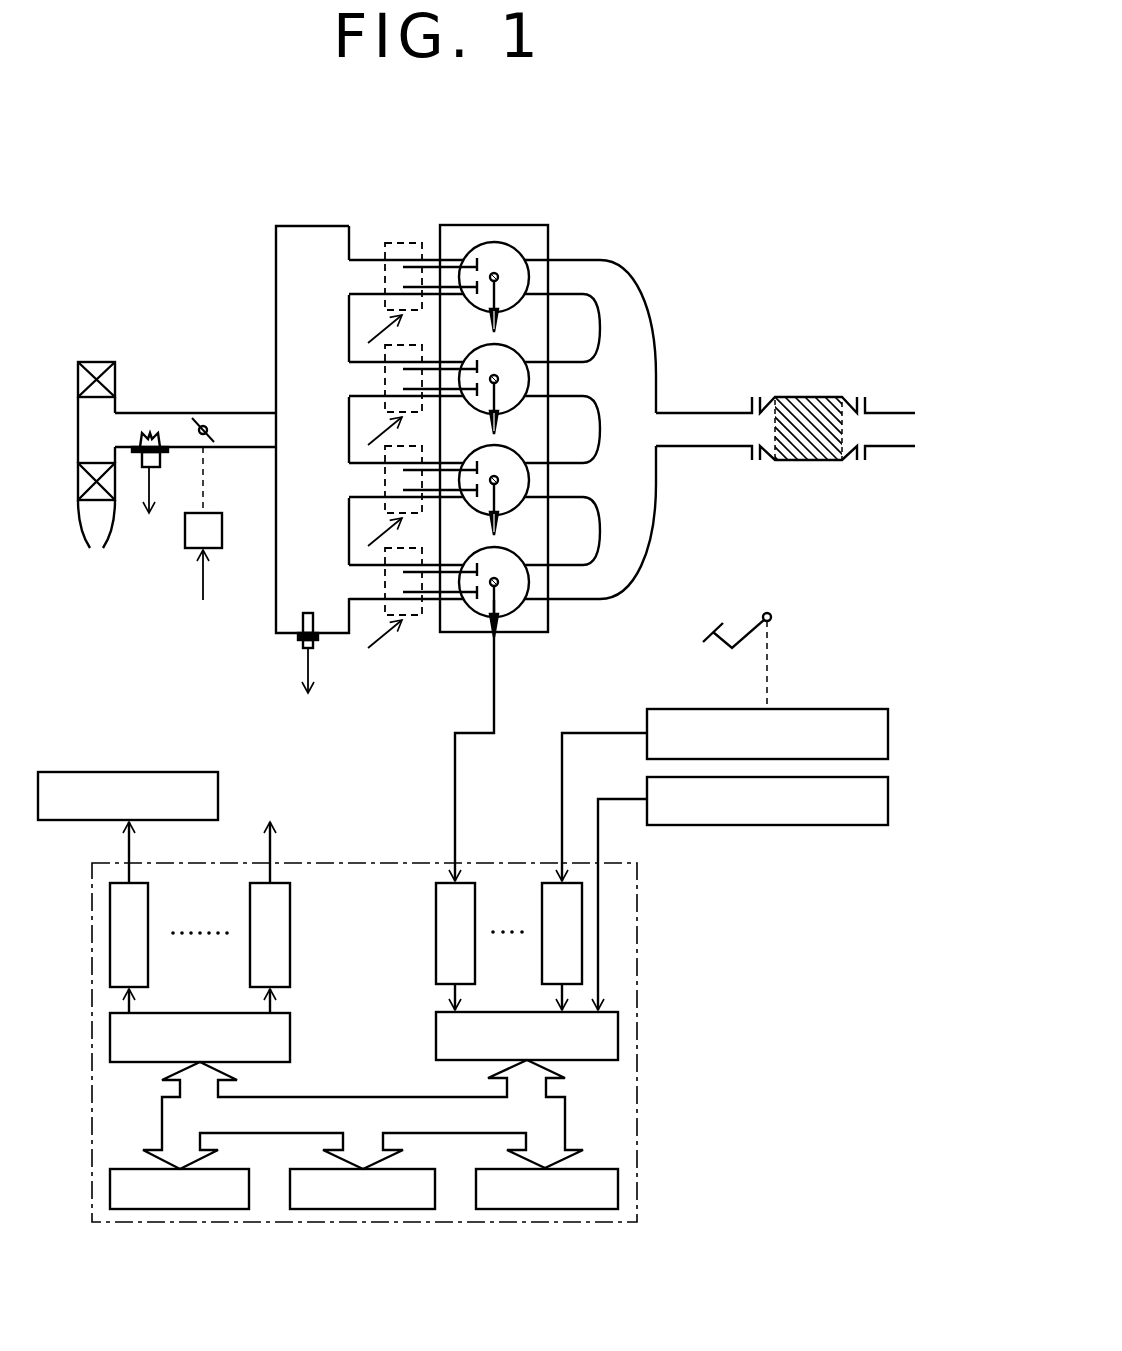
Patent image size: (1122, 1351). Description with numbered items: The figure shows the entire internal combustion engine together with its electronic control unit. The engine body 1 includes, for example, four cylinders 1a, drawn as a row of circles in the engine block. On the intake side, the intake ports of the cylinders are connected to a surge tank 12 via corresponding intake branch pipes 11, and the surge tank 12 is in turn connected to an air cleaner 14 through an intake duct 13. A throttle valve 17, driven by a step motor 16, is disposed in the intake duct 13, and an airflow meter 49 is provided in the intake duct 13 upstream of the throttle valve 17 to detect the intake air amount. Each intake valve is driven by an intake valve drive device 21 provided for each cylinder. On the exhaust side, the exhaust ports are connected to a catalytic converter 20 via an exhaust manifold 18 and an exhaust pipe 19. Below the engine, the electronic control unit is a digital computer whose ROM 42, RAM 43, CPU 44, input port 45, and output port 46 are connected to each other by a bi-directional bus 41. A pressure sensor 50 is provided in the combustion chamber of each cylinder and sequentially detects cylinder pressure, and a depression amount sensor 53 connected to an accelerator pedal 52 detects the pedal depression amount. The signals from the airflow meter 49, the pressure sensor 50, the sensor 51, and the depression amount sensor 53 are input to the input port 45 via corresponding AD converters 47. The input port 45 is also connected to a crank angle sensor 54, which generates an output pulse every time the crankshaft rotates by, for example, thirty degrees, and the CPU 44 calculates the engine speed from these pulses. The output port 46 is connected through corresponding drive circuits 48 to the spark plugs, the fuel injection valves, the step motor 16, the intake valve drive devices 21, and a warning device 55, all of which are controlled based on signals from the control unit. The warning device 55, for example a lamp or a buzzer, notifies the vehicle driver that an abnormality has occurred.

The engine body 1 is at (670, 232).
The cylinder 1a is at (494, 243).
The intake branch pipe 11 is at (372, 258).
The surge tank 12 is at (307, 226).
The intake duct 13 is at (235, 413).
The air cleaner 14 is at (116, 378).
The step motor 16 is at (183, 532).
The throttle valve 17 is at (200, 424).
The exhaust manifold 18 is at (642, 297).
The exhaust pipe 19 is at (697, 413).
The catalytic converter 20 is at (807, 397).
The intake valve drive device 21 is at (410, 617).
The bi-directional bus 41 is at (160, 1125).
The ROM 42 is at (213, 1210).
The RAM 43 is at (400, 1210).
The CPU 44 is at (582, 1209).
The input port 45 is at (437, 1037).
The output port 46 is at (292, 1037).
The AD converter 47 is at (542, 905).
The drive circuit 48 is at (250, 915).
The airflow meter 49 is at (142, 470).
The pressure sensor 50 is at (303, 642).
The sensor 51 is at (497, 586).
The accelerator pedal 52 is at (731, 609).
The depression amount sensor 53 is at (848, 709).
The crank angle sensor 54 is at (848, 825).
The warning device 55 is at (193, 772).